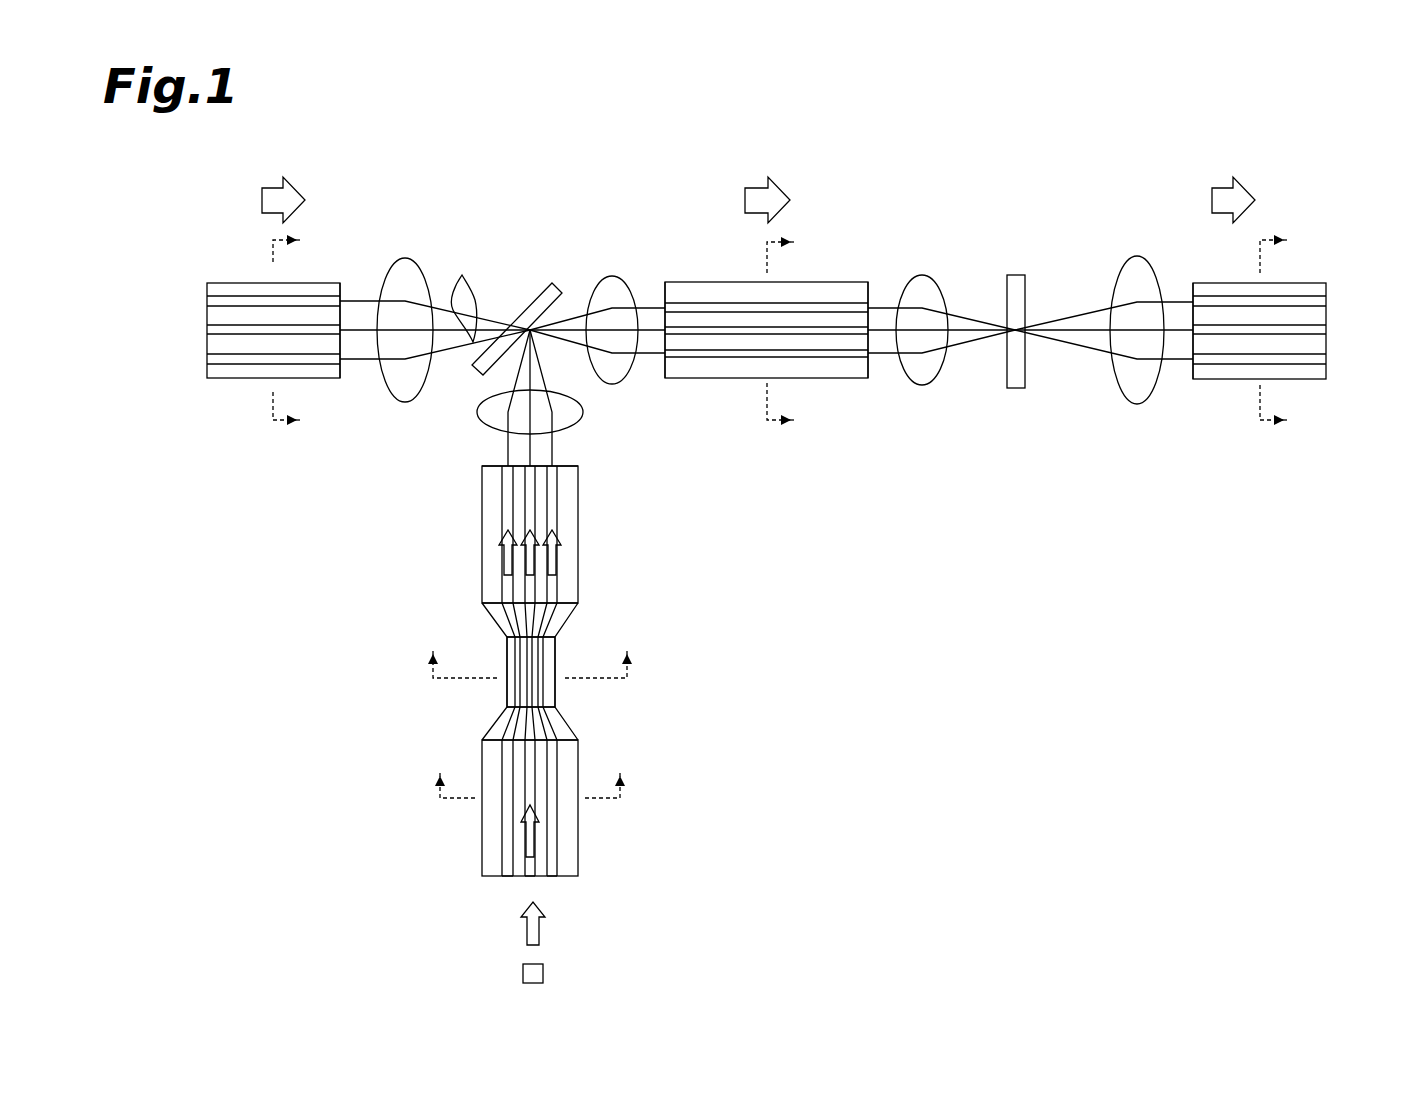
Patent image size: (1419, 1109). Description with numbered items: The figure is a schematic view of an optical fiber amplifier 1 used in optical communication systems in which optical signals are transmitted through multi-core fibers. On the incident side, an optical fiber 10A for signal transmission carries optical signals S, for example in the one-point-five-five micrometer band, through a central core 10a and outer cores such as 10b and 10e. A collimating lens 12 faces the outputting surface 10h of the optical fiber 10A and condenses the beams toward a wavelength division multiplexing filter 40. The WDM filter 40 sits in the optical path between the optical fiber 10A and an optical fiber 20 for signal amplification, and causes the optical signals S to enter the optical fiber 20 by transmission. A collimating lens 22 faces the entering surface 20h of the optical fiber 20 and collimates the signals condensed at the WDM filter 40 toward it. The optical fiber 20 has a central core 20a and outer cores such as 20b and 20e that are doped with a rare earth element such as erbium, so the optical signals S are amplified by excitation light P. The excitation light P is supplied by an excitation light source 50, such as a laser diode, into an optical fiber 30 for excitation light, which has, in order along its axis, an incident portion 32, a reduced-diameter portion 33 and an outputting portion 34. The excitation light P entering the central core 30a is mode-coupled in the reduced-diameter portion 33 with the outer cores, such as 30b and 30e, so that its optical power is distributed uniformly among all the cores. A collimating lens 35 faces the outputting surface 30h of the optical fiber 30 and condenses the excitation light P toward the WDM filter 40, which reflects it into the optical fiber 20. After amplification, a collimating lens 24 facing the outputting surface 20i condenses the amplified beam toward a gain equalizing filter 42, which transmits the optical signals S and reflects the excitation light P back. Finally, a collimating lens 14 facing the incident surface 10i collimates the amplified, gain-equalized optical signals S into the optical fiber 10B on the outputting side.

The optical fiber amplifier 1 is at (976, 180).
The optical fiber for signal transmission 10A is at (244, 283).
The optical fiber for signal transmission 10B is at (1210, 283).
The outputting surface 10h is at (341, 292).
The incident surface 10i is at (1192, 290).
The central core 10a is at (209, 330).
The outer core 10b is at (209, 302).
The outer core 10e is at (209, 360).
The collimating lens 12 is at (405, 258).
The collimating lens 14 is at (1133, 259).
The optical fiber for signal amplification 20 is at (700, 283).
The central core 20a is at (742, 335).
The outer core 20b is at (850, 312).
The outer core 20e is at (690, 356).
The entering surface 20h is at (664, 290).
The outputting surface 20i is at (869, 290).
The collimating lens 22 is at (605, 278).
The collimating lens 24 is at (928, 278).
The optical fiber for excitation light 30 is at (580, 530).
The central core 30a is at (528, 878).
The outer core 30b is at (505, 878).
The outer core 30e is at (553, 878).
The outputting surface 30h is at (482, 466).
The incident portion 32 is at (482, 825).
The reduced-diameter portion 33 is at (507, 672).
The outputting portion 34 is at (482, 530).
The collimating lens 35 is at (582, 412).
The wavelength division multiplexing filter 40 is at (540, 297).
The gain equalizing filter 42 is at (1015, 275).
The excitation light source 50 is at (545, 975).
The optical signal S is at (463, 293).
The excitation light P is at (508, 440).